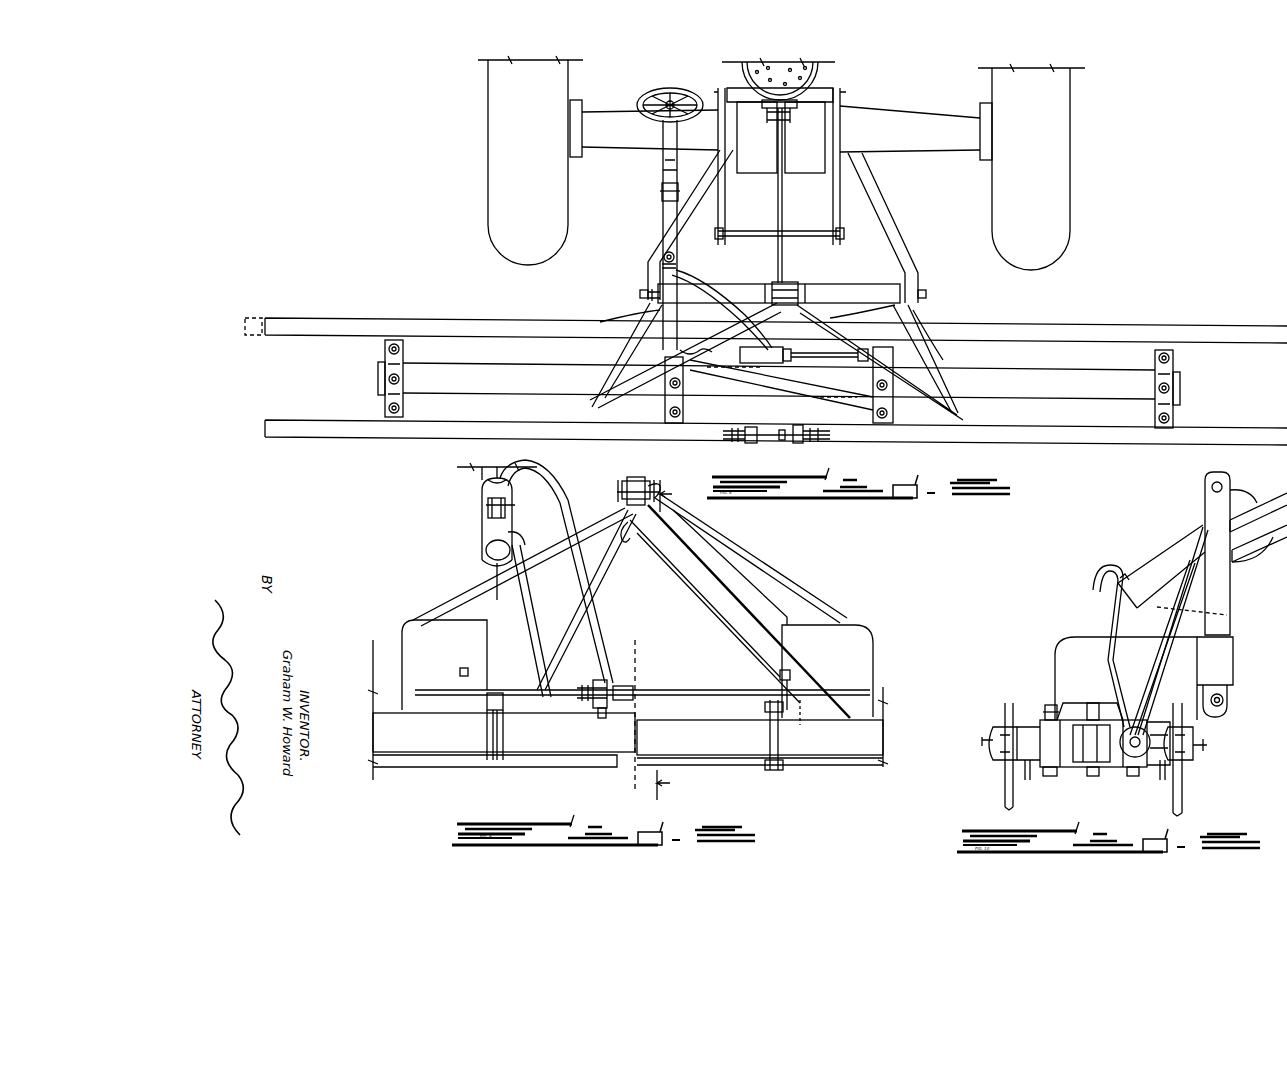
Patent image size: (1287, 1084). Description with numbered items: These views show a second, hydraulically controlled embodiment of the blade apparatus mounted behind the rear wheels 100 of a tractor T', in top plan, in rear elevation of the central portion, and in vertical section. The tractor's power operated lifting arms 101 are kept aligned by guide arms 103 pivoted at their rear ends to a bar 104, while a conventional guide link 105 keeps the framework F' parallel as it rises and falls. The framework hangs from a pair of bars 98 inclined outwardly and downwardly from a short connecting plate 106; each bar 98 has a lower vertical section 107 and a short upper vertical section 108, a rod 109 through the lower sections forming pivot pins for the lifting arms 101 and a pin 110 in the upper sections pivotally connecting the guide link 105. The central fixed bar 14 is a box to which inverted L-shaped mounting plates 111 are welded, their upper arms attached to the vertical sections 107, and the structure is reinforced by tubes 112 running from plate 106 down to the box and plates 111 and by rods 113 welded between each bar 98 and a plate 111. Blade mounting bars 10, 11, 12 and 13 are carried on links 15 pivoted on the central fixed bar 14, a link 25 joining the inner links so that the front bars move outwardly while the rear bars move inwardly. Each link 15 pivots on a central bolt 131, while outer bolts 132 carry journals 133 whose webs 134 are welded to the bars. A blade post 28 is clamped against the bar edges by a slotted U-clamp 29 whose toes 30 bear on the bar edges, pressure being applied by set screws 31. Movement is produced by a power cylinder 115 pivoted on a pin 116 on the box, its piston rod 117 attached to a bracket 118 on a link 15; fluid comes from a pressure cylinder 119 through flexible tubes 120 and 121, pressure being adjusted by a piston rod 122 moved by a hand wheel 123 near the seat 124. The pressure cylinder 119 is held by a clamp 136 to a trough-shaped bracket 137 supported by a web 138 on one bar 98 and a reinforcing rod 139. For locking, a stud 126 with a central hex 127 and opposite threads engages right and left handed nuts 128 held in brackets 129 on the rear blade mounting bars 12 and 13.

In FIG. 8, the rear wheels 100 is at (488, 160).
In FIG. 8, the power operated lifting arms 101 is at (666, 228).
In FIG. 8, the guide arms 103 is at (732, 196).
In FIG. 8, the bar 104 is at (770, 222).
In FIG. 8, the guide link 105 is at (782, 208).
In FIG. 9, the guide link 105 is at (639, 476).
In FIG. 9, the connecting plate 106 is at (616, 540).
In FIG. 9, the lower vertical section 107 is at (488, 672).
In FIG. 10, the lower vertical section 107 is at (1227, 692).
In FIG. 8, the upper vertical section 108 is at (799, 278).
In FIG. 9, the upper vertical section 108 is at (627, 476).
In FIG. 10, the upper vertical section 108 is at (1206, 493).
In FIG. 8, the rod 109 is at (618, 292).
In FIG. 9, the rod 109 is at (675, 686).
In FIG. 10, the rod 109 is at (1227, 700).
In FIG. 8, the pin 110 is at (760, 280).
In FIG. 9, the pin 110 is at (653, 482).
In FIG. 10, the pin 110 is at (1225, 481).
In FIG. 8, the mounting plates 111 is at (640, 314).
In FIG. 9, the mounting plates 111 is at (404, 648).
In FIG. 10, the mounting plates 111 is at (1070, 650).
In FIG. 8, the tubes 112 is at (737, 315).
In FIG. 9, the tubes 112 is at (651, 556).
In FIG. 8, the rods 113 is at (907, 310).
In FIG. 9, the rods 113 is at (449, 604).
In FIG. 10, the rods 113 is at (1152, 618).
In FIG. 8, the power cylinder 115 is at (790, 342).
In FIG. 10, the power cylinder 115 is at (1152, 732).
In FIG. 8, the pin 116 is at (683, 380).
In FIG. 8, the piston rod 117 is at (830, 360).
In FIG. 8, the bracket 118 is at (846, 362).
In FIG. 8, the pressure cylinder 119 is at (607, 318).
In FIG. 9, the pressure cylinder 119 is at (486, 496).
In FIG. 10, the pressure cylinder 119 is at (1173, 555).
In FIG. 8, the flexible tube 120 is at (678, 262).
In FIG. 9, the flexible tube 120 is at (592, 602).
In FIG. 10, the flexible tube 120 is at (1150, 663).
In FIG. 8, the flexible tube 121 is at (714, 376).
In FIG. 9, the flexible tube 121 is at (534, 624).
In FIG. 10, the flexible tube 121 is at (1090, 606).
In FIG. 8, the piston rod 122 is at (662, 202).
In FIG. 8, the hand wheel 123 is at (643, 97).
In FIG. 8, the seat 124 is at (739, 72).
In FIG. 8, the stud 126 is at (766, 428).
In FIG. 9, the stud 126 is at (636, 682).
In FIG. 8, the hex 127 is at (776, 437).
In FIG. 9, the hex 127 is at (640, 692).
In FIG. 8, the fixed nuts 128 is at (750, 426).
In FIG. 9, the fixed nuts 128 is at (601, 680).
In FIG. 8, the brackets 129 is at (800, 439).
In FIG. 9, the brackets 129 is at (604, 717).
In FIG. 8, the central bolt 131 is at (388, 382).
In FIG. 9, the central bolt 131 is at (771, 744).
In FIG. 8, the outer bolts 132 is at (399, 350).
In FIG. 10, the outer bolts 132 is at (1089, 777).
In FIG. 9, the journal 133 is at (503, 730).
In FIG. 10, the journal 133 is at (1052, 777).
In FIG. 8, the web 134 is at (403, 423).
In FIG. 9, the web 134 is at (489, 734).
In FIG. 10, the web 134 is at (1018, 777).
In FIG. 8, the clamp 136 is at (642, 302).
In FIG. 9, the clamp 136 is at (483, 518).
In FIG. 8, the bracket 137 is at (662, 166).
In FIG. 9, the bracket 137 is at (484, 559).
In FIG. 9, the web 138 is at (492, 576).
In FIG. 9, the reinforcing rod 139 is at (552, 533).
In FIG. 8, the bars 98 is at (850, 276).
In FIG. 9, the bars 98 is at (705, 540).
In FIG. 10, the bars 98 is at (1234, 579).
In FIG. 8, the blade mounting bar 11 is at (661, 386).
In FIG. 8, the blade mounting bar 13 is at (1262, 434).
In FIG. 8, the blade mounting bar 10 is at (292, 312).
In FIG. 9, the blade mounting bar 10 is at (664, 640).
In FIG. 10, the blade mounting bar 10 is at (1160, 724).
In FIG. 8, the blade mounting bar 12 is at (294, 422).
In FIG. 9, the blade mounting bar 12 is at (406, 770).
In FIG. 10, the blade mounting bar 12 is at (1018, 714).
In FIG. 8, the central fixed bar 14 is at (1042, 368).
In FIG. 9, the central fixed bar 14 is at (628, 710).
In FIG. 10, the central fixed bar 14 is at (1114, 772).
In FIG. 8, the links 15 is at (388, 396).
In FIG. 9, the links 15 is at (796, 726).
In FIG. 10, the links 15 is at (1100, 782).
In FIG. 8, the link 25 is at (855, 410).
In FIG. 10, the post 28 is at (1005, 795).
In FIG. 10, the U-clamp 29 is at (1000, 748).
In FIG. 10, the toes 30 is at (1045, 712).
In FIG. 10, the set screws 31 is at (1213, 740).